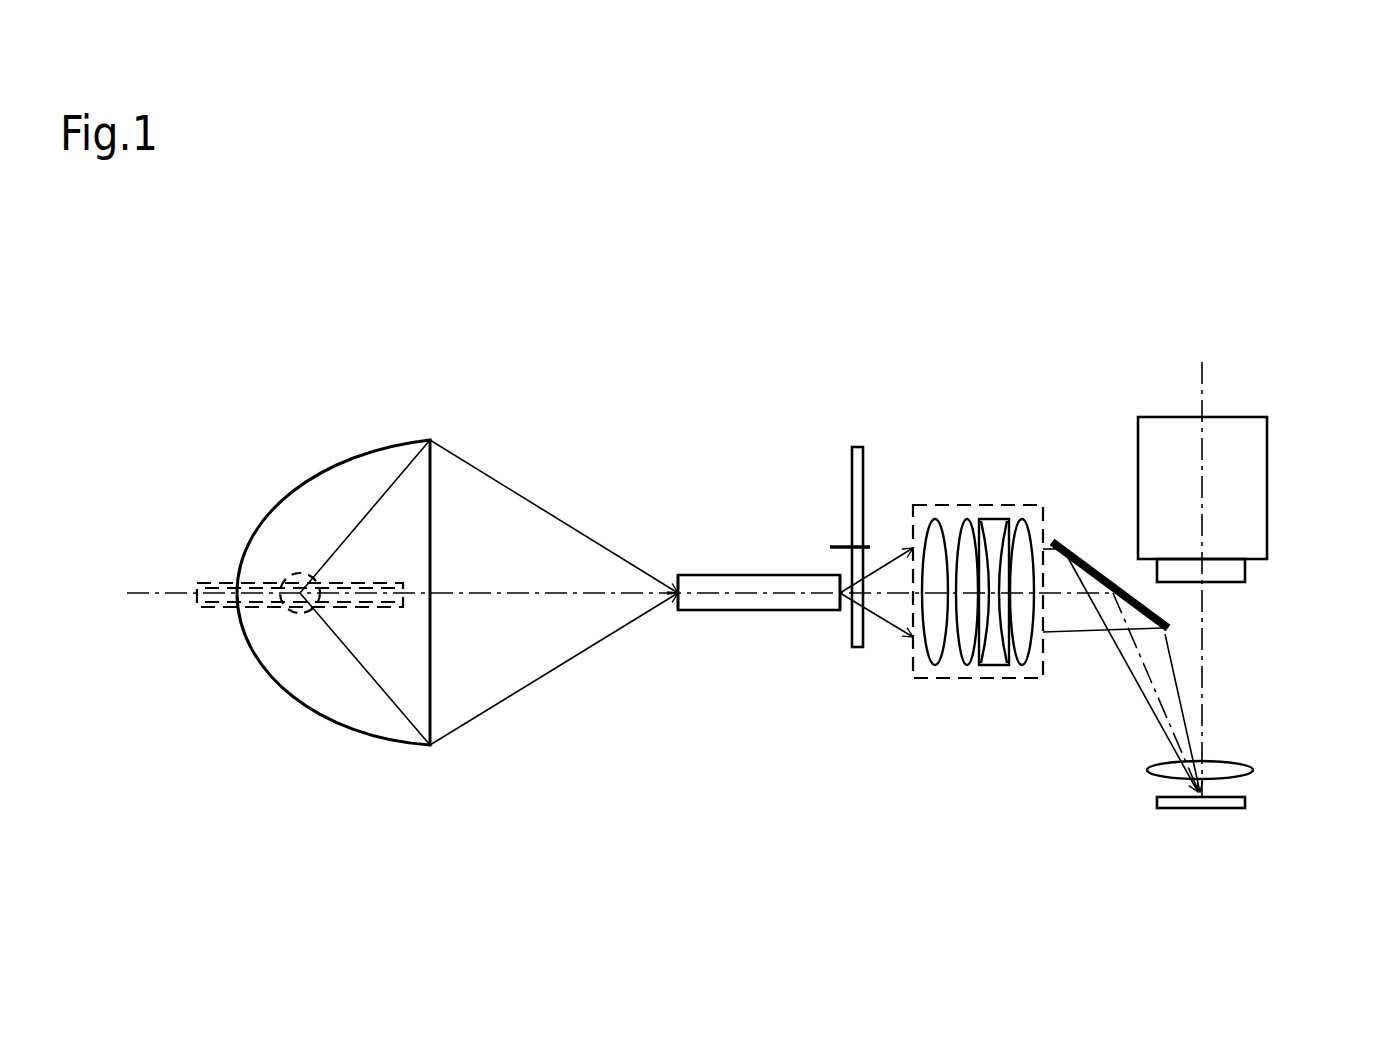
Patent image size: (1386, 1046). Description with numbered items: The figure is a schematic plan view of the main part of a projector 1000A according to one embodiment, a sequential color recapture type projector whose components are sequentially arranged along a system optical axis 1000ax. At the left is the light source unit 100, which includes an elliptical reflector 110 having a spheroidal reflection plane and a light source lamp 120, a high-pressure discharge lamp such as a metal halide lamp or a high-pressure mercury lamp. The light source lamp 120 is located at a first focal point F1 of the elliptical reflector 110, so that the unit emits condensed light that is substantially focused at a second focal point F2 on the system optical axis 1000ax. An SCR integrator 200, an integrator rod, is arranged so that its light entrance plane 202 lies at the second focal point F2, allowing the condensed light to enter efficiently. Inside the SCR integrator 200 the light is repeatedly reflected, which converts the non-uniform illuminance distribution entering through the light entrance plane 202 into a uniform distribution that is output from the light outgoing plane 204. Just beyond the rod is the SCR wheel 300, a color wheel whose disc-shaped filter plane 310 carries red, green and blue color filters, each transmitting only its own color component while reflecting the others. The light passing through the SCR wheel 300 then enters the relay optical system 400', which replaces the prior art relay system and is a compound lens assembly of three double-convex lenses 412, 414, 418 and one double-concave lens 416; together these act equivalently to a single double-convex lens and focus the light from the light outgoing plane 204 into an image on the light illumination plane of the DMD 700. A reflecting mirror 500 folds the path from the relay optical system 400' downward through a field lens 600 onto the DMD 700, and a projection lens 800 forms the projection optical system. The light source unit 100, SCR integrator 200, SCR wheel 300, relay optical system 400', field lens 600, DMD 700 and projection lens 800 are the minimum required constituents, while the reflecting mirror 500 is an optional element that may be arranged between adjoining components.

The projector 1000A is at (237, 273).
The system optical axis 1000ax is at (163, 591).
The light source unit 100 is at (437, 580).
The elliptical reflector 110 is at (343, 736).
The light source lamp 120 is at (297, 618).
The first focal point F1 is at (296, 580).
The second focal point F2 is at (682, 578).
The SCR integrator 200 is at (751, 574).
The light entrance plane 202 is at (671, 612).
The light outgoing plane 204 is at (845, 612).
The SCR wheel 300 is at (855, 447).
The filter plane 310 is at (852, 468).
The relay optical system 400' is at (982, 616).
The double-convex lens 412 is at (936, 666).
The double-convex lens 414 is at (968, 666).
The double-concave lens 416 is at (995, 666).
The double-convex lens 418 is at (1025, 666).
The reflecting mirror 500 is at (1078, 547).
The field lens 600 is at (1243, 765).
The DMD 700 is at (1247, 804).
The projection lens 800 is at (1268, 503).